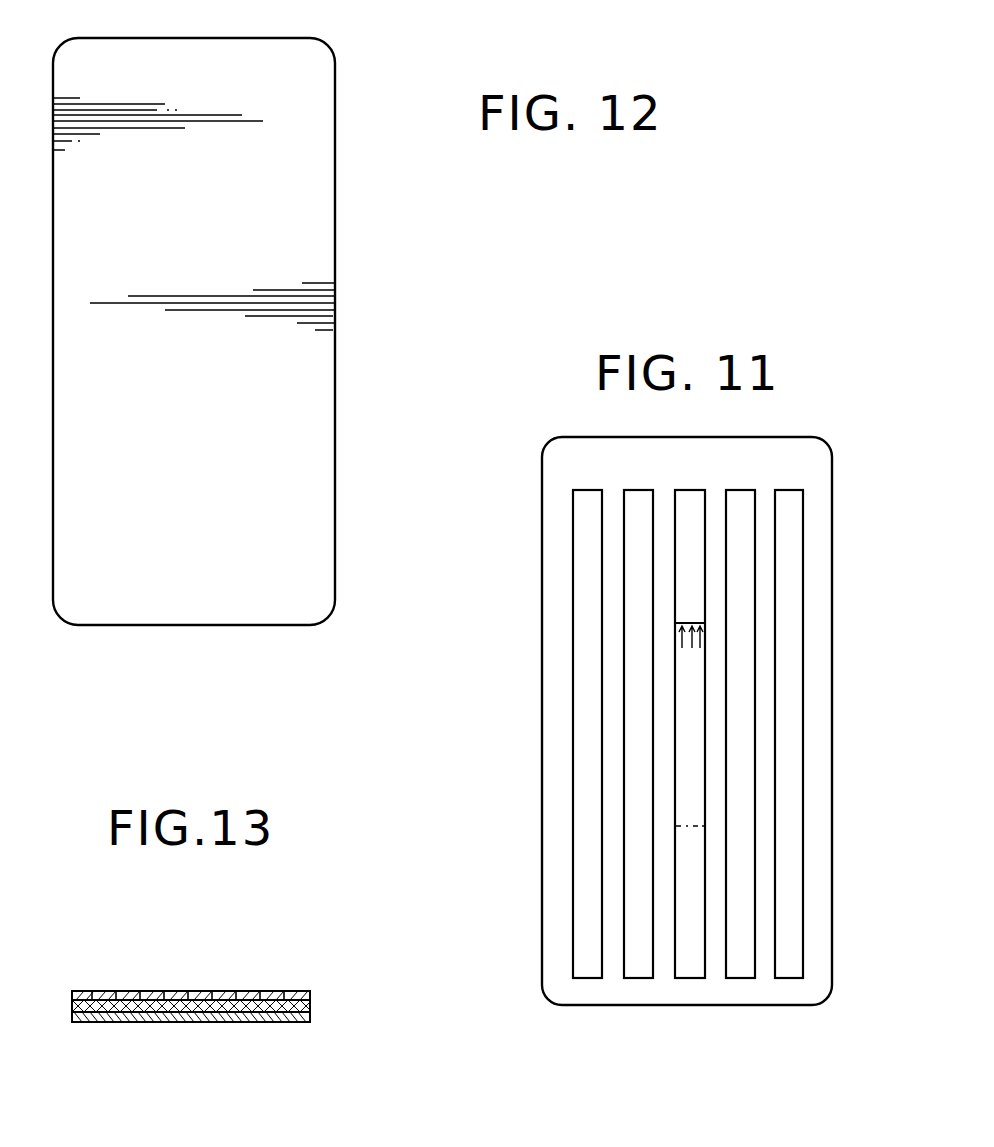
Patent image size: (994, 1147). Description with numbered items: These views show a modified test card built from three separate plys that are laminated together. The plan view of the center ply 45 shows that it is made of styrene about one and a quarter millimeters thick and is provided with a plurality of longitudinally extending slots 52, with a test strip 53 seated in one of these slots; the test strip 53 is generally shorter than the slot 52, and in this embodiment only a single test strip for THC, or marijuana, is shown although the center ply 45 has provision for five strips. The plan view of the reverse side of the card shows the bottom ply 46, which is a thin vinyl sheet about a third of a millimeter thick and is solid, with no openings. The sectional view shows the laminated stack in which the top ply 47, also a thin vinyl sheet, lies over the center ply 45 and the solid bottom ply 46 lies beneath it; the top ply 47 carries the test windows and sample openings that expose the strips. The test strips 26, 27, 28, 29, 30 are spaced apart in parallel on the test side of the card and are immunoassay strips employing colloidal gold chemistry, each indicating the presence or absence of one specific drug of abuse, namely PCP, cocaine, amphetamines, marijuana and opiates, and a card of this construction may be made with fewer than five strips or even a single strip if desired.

In FIG. 13, the test strip 26 is at (105, 991).
In FIG. 13, the test strip 27 is at (155, 991).
In FIG. 13, the test strip 28 is at (195, 991).
In FIG. 13, the test strip 29 is at (237, 991).
In FIG. 13, the test strip 30 is at (278, 991).
In FIG. 11, the center ply 45 is at (832, 545).
In FIG. 13, the center ply 45 is at (310, 1005).
In FIG. 12, the bottom ply 46 is at (325, 68).
In FIG. 13, the bottom ply 46 is at (300, 1022).
In FIG. 13, the top ply 47 is at (310, 995).
In FIG. 11, the slot 52 is at (803, 643).
In FIG. 11, the test strip 53 is at (698, 765).